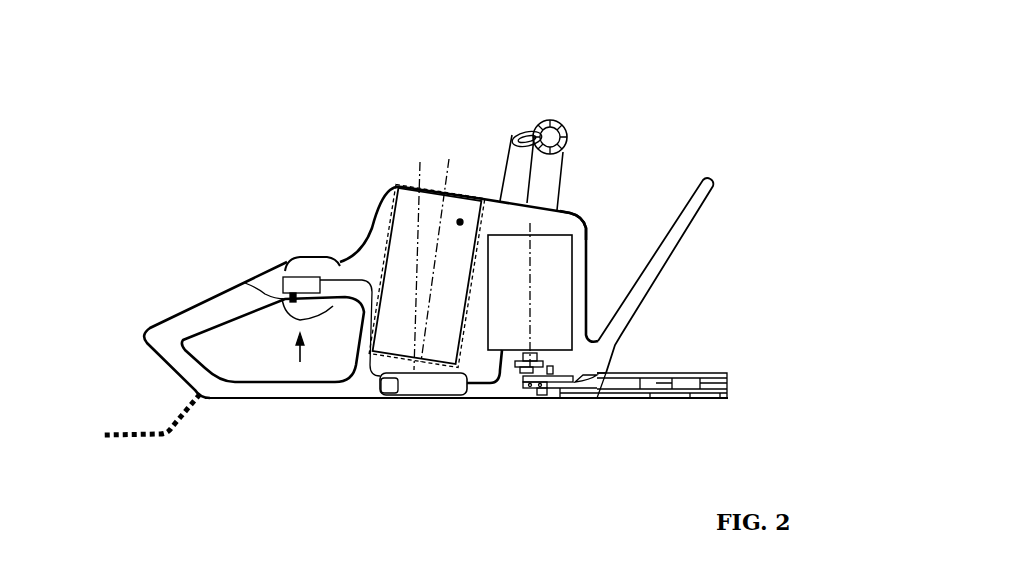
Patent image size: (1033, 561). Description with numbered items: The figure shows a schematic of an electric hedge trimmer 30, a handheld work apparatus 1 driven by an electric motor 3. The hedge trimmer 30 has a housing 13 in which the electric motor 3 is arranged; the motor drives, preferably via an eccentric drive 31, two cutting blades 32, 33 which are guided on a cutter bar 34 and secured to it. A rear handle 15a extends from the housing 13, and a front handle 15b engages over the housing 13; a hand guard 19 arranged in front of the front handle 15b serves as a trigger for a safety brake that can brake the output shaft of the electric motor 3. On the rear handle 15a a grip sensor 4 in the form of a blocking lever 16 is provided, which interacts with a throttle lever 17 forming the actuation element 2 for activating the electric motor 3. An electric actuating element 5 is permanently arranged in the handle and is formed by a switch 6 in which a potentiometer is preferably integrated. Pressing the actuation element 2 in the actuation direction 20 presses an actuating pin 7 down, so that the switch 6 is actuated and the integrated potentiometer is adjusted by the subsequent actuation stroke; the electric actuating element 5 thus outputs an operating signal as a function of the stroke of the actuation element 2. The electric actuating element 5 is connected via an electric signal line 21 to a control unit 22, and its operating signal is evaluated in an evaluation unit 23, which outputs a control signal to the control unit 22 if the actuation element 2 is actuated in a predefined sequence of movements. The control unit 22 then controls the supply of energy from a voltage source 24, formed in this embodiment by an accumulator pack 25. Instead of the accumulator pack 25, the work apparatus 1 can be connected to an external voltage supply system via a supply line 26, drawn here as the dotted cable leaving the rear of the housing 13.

The work apparatus 1 is at (360, 172).
The actuation element 2 is at (310, 304).
The electric motor 3 is at (560, 280).
The grip sensor 4 is at (286, 249).
The electric actuating element 5 is at (297, 289).
The switch 6 is at (300, 283).
The actuating pin 7 is at (288, 297).
The housing 13 is at (481, 393).
The rear handle 15a is at (220, 388).
The front handle 15b is at (552, 172).
The blocking lever 16 is at (317, 260).
The throttle lever 17 is at (322, 306).
The hand guard 19 is at (687, 232).
The actuation direction 20 is at (293, 348).
The electric signal line 21 is at (347, 277).
The control unit 22 is at (429, 388).
The evaluation unit 23 is at (390, 388).
The voltage source 24 is at (460, 222).
The accumulator pack 25 is at (430, 182).
The supply line 26 is at (168, 427).
The hedge trimmer 30 is at (580, 222).
The eccentric drive 31 is at (538, 384).
The cutting blade 32 is at (720, 382).
The cutting blade 33 is at (627, 393).
The cutter bar 34 is at (684, 357).